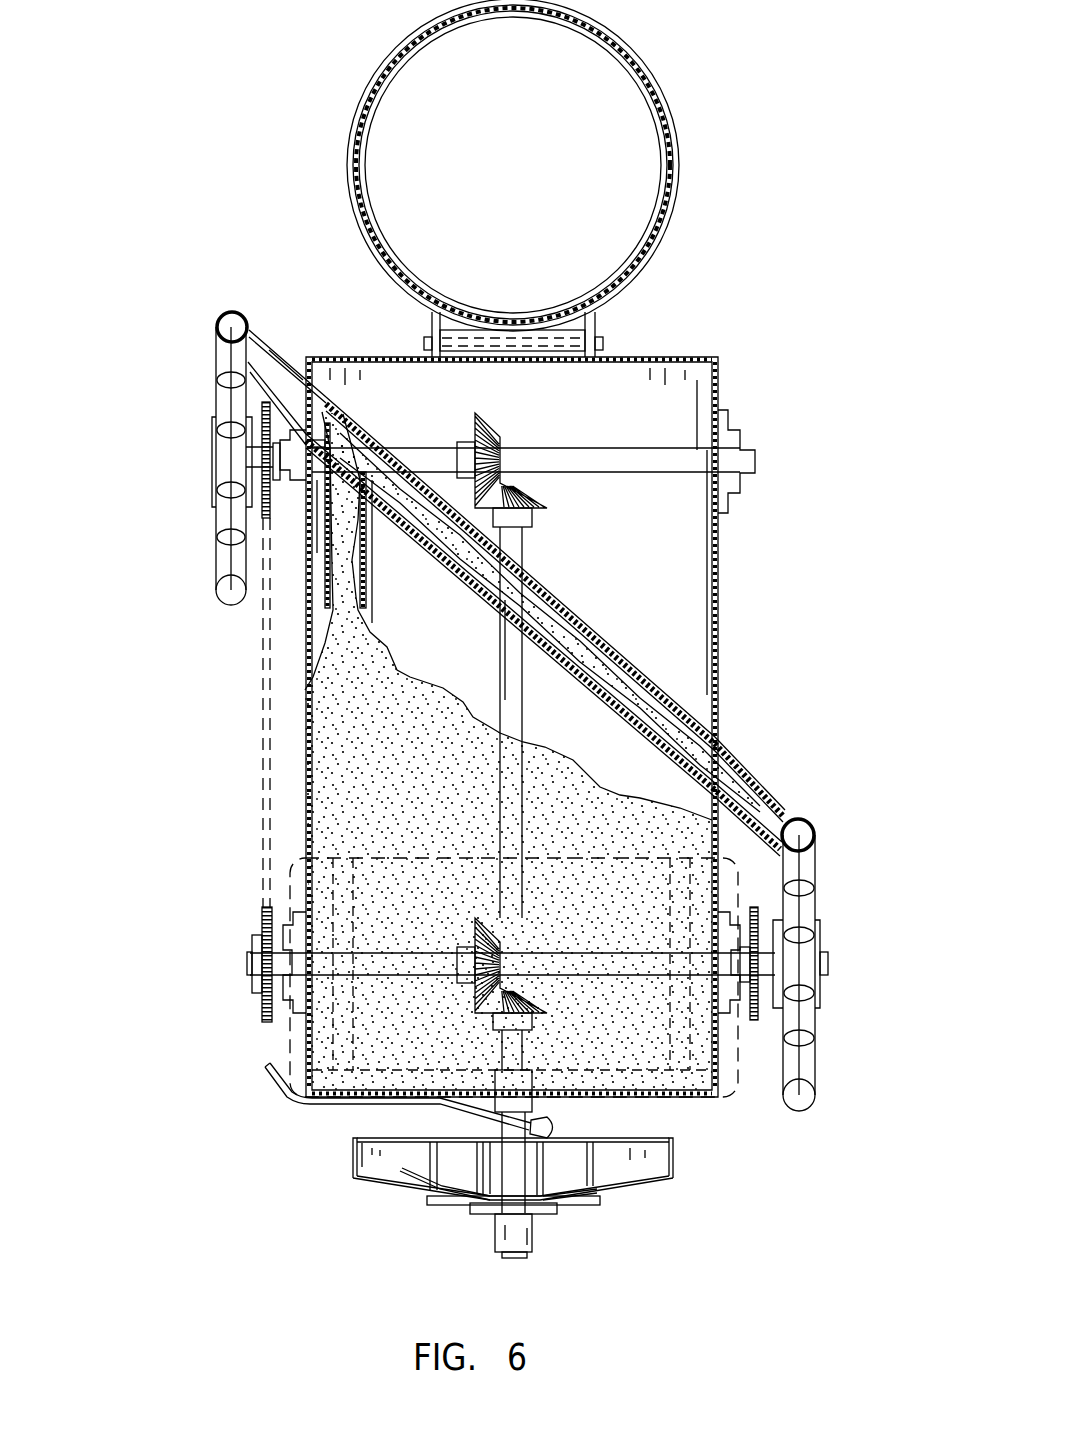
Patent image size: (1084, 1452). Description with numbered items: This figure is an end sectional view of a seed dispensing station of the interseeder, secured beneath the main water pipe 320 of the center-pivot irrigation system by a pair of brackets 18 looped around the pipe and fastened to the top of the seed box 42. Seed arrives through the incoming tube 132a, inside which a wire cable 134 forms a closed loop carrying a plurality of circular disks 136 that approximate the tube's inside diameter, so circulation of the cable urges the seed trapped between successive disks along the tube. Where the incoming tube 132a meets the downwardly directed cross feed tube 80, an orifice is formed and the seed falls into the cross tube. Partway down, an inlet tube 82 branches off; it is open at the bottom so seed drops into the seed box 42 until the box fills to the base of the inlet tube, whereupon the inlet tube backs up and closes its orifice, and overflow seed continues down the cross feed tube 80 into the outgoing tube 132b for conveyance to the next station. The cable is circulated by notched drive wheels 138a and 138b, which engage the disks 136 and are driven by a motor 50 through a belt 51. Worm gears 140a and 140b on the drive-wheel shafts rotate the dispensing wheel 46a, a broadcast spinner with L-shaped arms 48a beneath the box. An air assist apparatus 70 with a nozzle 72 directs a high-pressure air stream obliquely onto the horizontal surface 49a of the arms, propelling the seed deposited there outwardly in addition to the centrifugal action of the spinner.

The brackets 18 is at (655, 247).
The main water pipe 320 is at (604, 38).
The seed box 42 is at (718, 604).
The cross feed tube 80 is at (732, 752).
The inlet tube 82 is at (368, 533).
The worm gear 140a is at (556, 503).
The worm gear 140b is at (552, 1003).
The incoming tube 132a is at (220, 313).
The outgoing tube 132b is at (806, 821).
The wire cable 134 is at (233, 467).
The circular disks 136 is at (216, 319).
The drive wheel 138a is at (218, 354).
The drive wheel 138b is at (815, 905).
The belt 51 is at (265, 766).
The motor 50 is at (286, 1032).
The air assist apparatus 70 is at (434, 1117).
The air nozzle 72 is at (556, 1130).
The dispensing wheel 46a is at (413, 1221).
The L-shaped arms 48a is at (348, 1163).
The horizontal surface 49a is at (400, 1172).